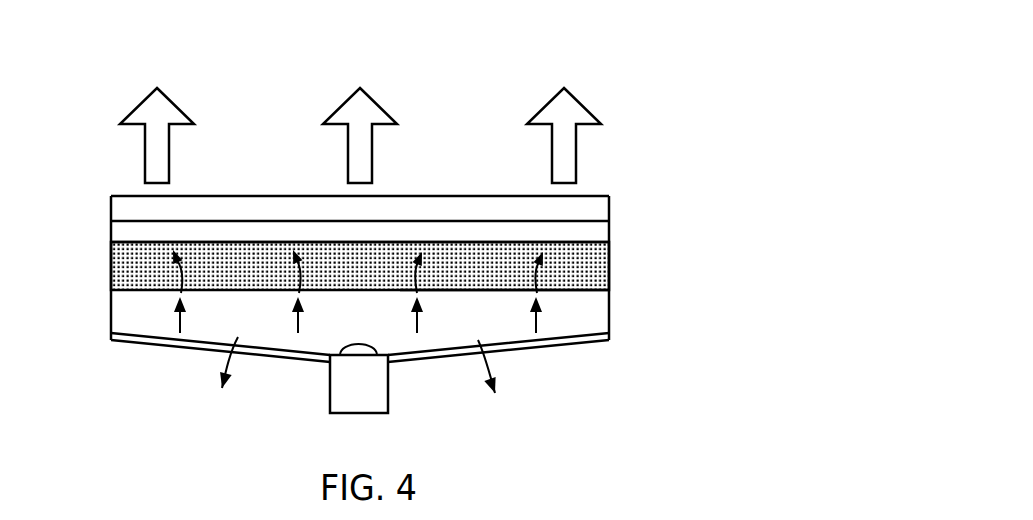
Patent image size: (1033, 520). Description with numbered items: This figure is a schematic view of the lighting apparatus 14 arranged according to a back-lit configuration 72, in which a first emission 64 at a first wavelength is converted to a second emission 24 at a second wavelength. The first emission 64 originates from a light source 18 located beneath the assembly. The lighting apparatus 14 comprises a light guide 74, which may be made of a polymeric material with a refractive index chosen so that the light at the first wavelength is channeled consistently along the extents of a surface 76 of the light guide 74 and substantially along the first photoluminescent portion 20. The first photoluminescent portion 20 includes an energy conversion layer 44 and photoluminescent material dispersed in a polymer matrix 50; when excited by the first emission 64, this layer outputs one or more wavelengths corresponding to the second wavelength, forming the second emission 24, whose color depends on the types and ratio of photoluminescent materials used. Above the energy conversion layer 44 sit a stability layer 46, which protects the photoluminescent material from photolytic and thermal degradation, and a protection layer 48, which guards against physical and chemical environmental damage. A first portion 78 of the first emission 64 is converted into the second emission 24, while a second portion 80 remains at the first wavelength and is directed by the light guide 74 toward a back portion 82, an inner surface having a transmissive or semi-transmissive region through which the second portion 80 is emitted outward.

The lighting apparatus 14 is at (382, 219).
The back-lit configuration 72 is at (382, 219).
The light source (LED) 18 is at (347, 393).
The first photoluminescent portion 20 is at (382, 278).
The second emission 24 is at (148, 157).
The energy conversion layer 44 is at (421, 312).
The polymer matrix 50 is at (373, 312).
The stability layer 46 is at (113, 232).
The protection layer 48 is at (113, 208).
The first emission 64 is at (290, 318).
The light guide 74 is at (327, 304).
The surface 76 is at (583, 292).
The first portion 78 is at (292, 262).
The second portion 80 is at (229, 362).
The back portion 82 is at (284, 361).